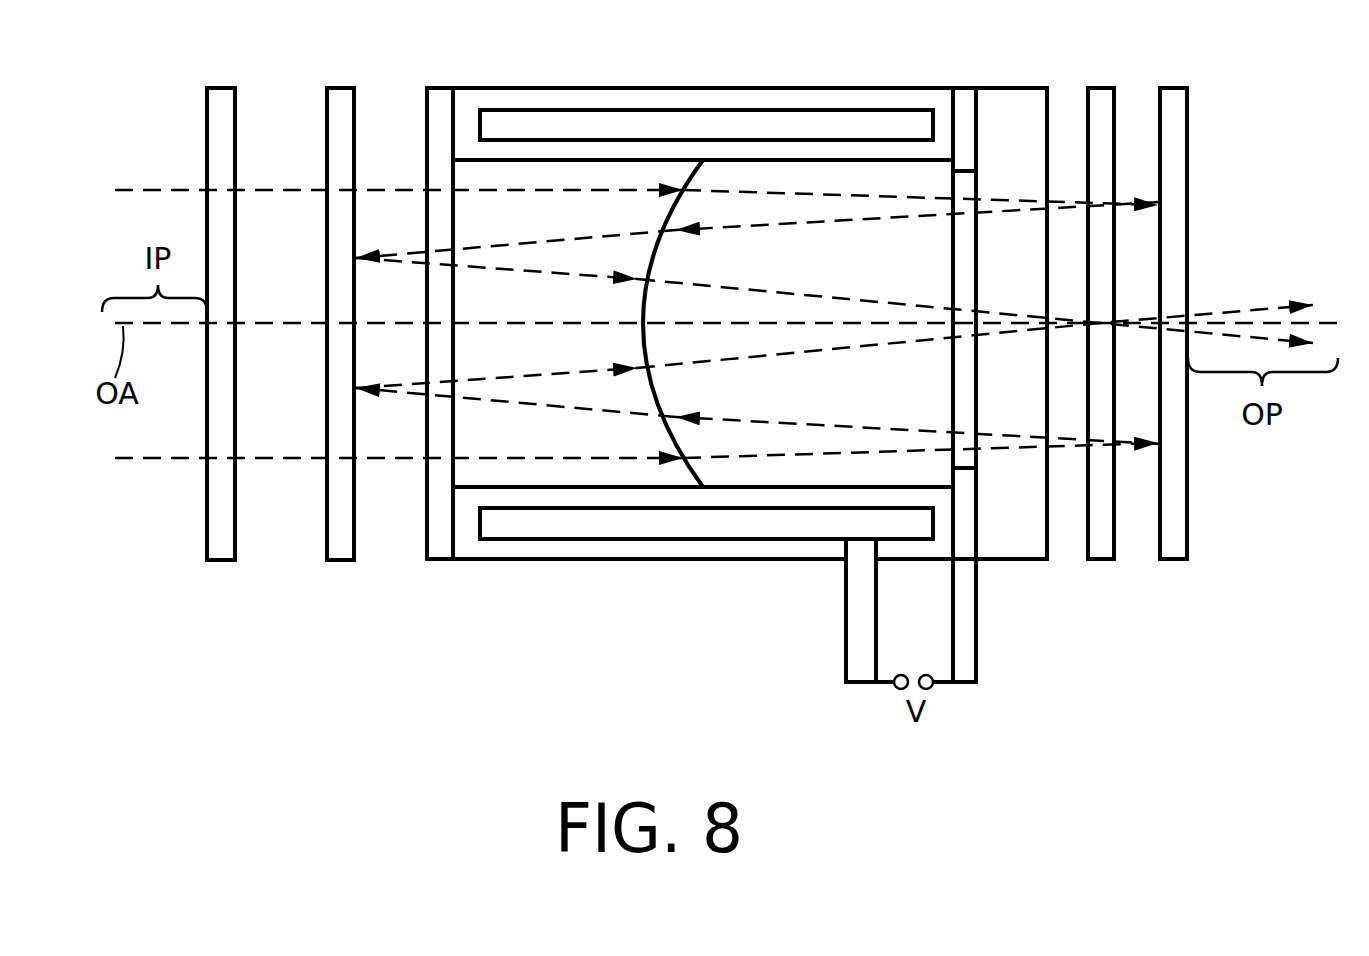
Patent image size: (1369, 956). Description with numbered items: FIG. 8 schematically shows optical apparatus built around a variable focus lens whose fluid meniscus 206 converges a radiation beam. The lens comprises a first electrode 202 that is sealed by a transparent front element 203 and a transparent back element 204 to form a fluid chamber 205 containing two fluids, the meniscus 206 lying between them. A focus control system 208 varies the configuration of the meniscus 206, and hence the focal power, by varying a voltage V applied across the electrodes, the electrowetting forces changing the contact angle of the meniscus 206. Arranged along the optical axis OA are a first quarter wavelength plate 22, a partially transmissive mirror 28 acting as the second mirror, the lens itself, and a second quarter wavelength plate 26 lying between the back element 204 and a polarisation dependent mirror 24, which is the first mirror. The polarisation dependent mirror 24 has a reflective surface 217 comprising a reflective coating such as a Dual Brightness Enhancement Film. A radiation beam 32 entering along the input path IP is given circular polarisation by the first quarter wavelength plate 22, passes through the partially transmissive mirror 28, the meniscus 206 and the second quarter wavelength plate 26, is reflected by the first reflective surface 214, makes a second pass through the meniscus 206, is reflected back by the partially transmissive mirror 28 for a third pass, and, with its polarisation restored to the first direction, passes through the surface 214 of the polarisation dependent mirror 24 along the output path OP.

The first quarter wavelength plate 22 is at (221, 548).
The partially transmissive mirror 28 is at (338, 108).
The reflective surface 217 is at (338, 548).
The transparent front element 203 is at (441, 548).
The fluid chamber 205 is at (490, 170).
The first electrode 202 is at (575, 525).
The fluid meniscus 206 is at (662, 398).
The focus control system 208 is at (965, 665).
The transparent back element 204 is at (1030, 548).
The second quarter wavelength plate 26 is at (1097, 548).
The polarisation dependent mirror 24 is at (1172, 548).
The first reflective surface 214 is at (1162, 112).
The radiation beam 32 is at (150, 460).